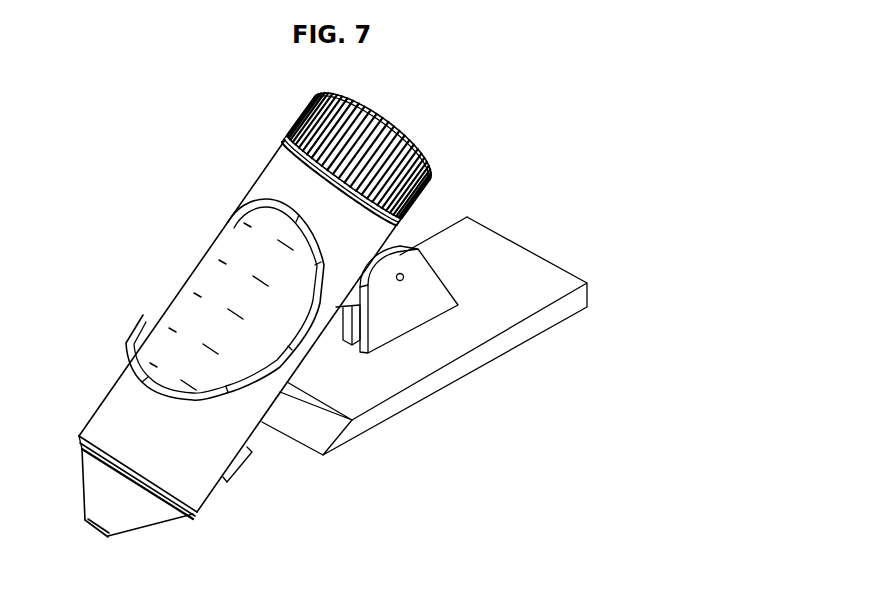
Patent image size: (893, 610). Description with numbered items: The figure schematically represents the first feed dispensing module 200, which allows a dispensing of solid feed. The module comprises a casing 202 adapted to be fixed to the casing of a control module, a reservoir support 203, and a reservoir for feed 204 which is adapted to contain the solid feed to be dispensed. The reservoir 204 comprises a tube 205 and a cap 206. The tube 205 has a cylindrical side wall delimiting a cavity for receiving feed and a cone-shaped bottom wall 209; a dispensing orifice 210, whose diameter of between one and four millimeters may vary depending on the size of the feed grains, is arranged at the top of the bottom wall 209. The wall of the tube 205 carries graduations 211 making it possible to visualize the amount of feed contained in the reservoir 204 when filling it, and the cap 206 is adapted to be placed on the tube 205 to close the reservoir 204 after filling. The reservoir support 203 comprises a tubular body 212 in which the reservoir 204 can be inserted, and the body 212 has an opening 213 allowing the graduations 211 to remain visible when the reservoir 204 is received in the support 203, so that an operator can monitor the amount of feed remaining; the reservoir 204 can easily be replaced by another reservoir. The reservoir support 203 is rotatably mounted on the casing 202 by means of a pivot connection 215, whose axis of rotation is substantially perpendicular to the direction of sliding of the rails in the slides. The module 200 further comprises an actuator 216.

The first feed dispensing module 200 is at (539, 190).
The casing 202 is at (481, 360).
The reservoir support 203 is at (279, 177).
The reservoir for feed 204 is at (190, 313).
The tube 205 is at (203, 281).
The cap 206 is at (388, 121).
The cone-shaped bottom wall 209 is at (139, 518).
The dispensing orifice 210 is at (92, 539).
The graduations 211 is at (268, 286).
The tubular body 212 is at (119, 405).
The opening 213 is at (143, 347).
The pivot connection 215 is at (406, 281).
The actuator 216 is at (221, 484).